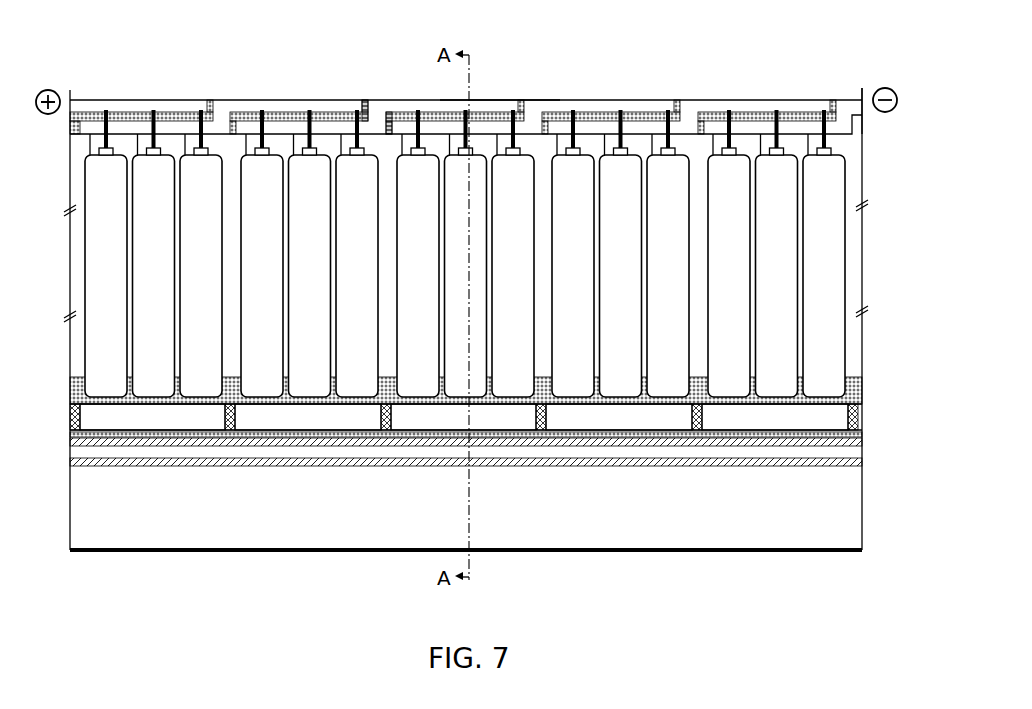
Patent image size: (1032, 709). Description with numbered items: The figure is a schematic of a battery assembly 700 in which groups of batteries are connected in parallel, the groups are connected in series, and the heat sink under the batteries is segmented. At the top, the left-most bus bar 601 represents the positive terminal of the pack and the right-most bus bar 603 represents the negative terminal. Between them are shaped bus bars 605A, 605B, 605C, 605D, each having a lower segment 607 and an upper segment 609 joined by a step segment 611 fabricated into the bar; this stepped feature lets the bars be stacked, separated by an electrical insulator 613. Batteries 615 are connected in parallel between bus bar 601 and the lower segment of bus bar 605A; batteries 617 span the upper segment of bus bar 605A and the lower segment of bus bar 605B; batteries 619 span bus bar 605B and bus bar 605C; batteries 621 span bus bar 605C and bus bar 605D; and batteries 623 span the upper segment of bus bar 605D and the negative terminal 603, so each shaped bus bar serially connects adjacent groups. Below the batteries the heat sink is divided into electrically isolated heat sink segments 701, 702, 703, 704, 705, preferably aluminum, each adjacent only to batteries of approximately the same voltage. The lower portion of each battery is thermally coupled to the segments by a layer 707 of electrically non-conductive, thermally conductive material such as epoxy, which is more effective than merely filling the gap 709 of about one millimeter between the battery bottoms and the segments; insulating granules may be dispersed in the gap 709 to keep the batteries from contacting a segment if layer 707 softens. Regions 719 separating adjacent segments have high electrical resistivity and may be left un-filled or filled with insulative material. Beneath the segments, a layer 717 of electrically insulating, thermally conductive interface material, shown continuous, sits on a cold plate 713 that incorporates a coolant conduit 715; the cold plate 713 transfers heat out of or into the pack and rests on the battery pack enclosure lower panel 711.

The battery assembly 700 is at (668, 50).
The bus bar 601 is at (142, 110).
The bus bar 603 is at (858, 100).
The shaped bus bar 605A is at (242, 108).
The shaped bus bar 605B is at (502, 106).
The shaped bus bar 605C is at (642, 108).
The shaped bus bar 605D is at (760, 108).
The lower segment 607 is at (371, 121).
The upper segment 609 is at (487, 97).
The step segment 611 is at (391, 116).
The electrical insulator 613 is at (211, 103).
The batteries 615 is at (88, 232).
The batteries 617 is at (244, 232).
The batteries 619 is at (400, 232).
The batteries 621 is at (555, 232).
The batteries 623 is at (711, 232).
The heat sink segment 701 is at (134, 428).
The heat sink segment 702 is at (290, 428).
The heat sink segment 703 is at (445, 428).
The heat sink segment 704 is at (601, 428).
The heat sink segment 705 is at (757, 428).
The layer of thermally conductive material 707 is at (856, 385).
The gap 709 is at (855, 403).
The battery pack enclosure lower panel 711 is at (600, 552).
The cold plate 713 is at (597, 467).
The coolant conduit 715 is at (675, 452).
The layer of interface material 717 is at (73, 435).
The regions 719 is at (386, 432).